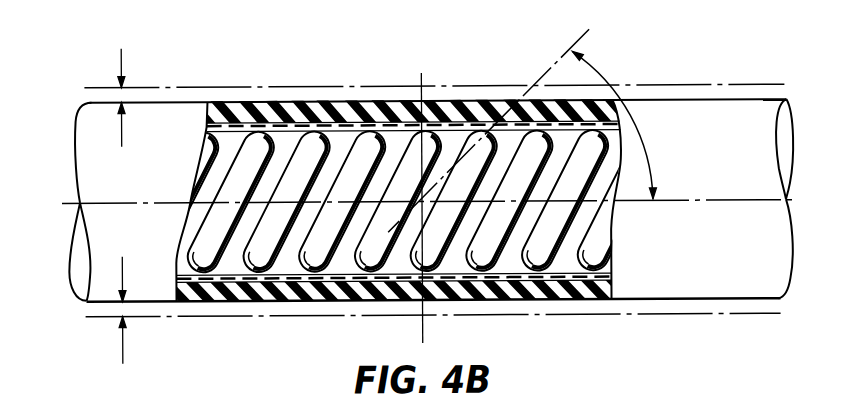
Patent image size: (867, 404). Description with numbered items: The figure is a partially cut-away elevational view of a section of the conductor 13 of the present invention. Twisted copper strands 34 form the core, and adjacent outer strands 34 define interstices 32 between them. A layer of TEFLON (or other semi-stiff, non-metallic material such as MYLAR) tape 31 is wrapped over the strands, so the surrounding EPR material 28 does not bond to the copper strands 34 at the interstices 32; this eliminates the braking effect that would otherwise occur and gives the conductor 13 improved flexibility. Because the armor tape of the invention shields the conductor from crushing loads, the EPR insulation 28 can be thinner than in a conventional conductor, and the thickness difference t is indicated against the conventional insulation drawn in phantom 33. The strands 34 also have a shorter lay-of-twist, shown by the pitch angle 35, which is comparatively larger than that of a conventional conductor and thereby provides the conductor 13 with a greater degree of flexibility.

The conductor 13 is at (313, 83).
The EPR material 28 is at (347, 111).
The TEFLON tape 31 is at (470, 290).
The interstices 32 is at (442, 129).
The phantom 33 is at (667, 85).
The copper strands 34 is at (318, 257).
The pitch angle 35 is at (650, 145).